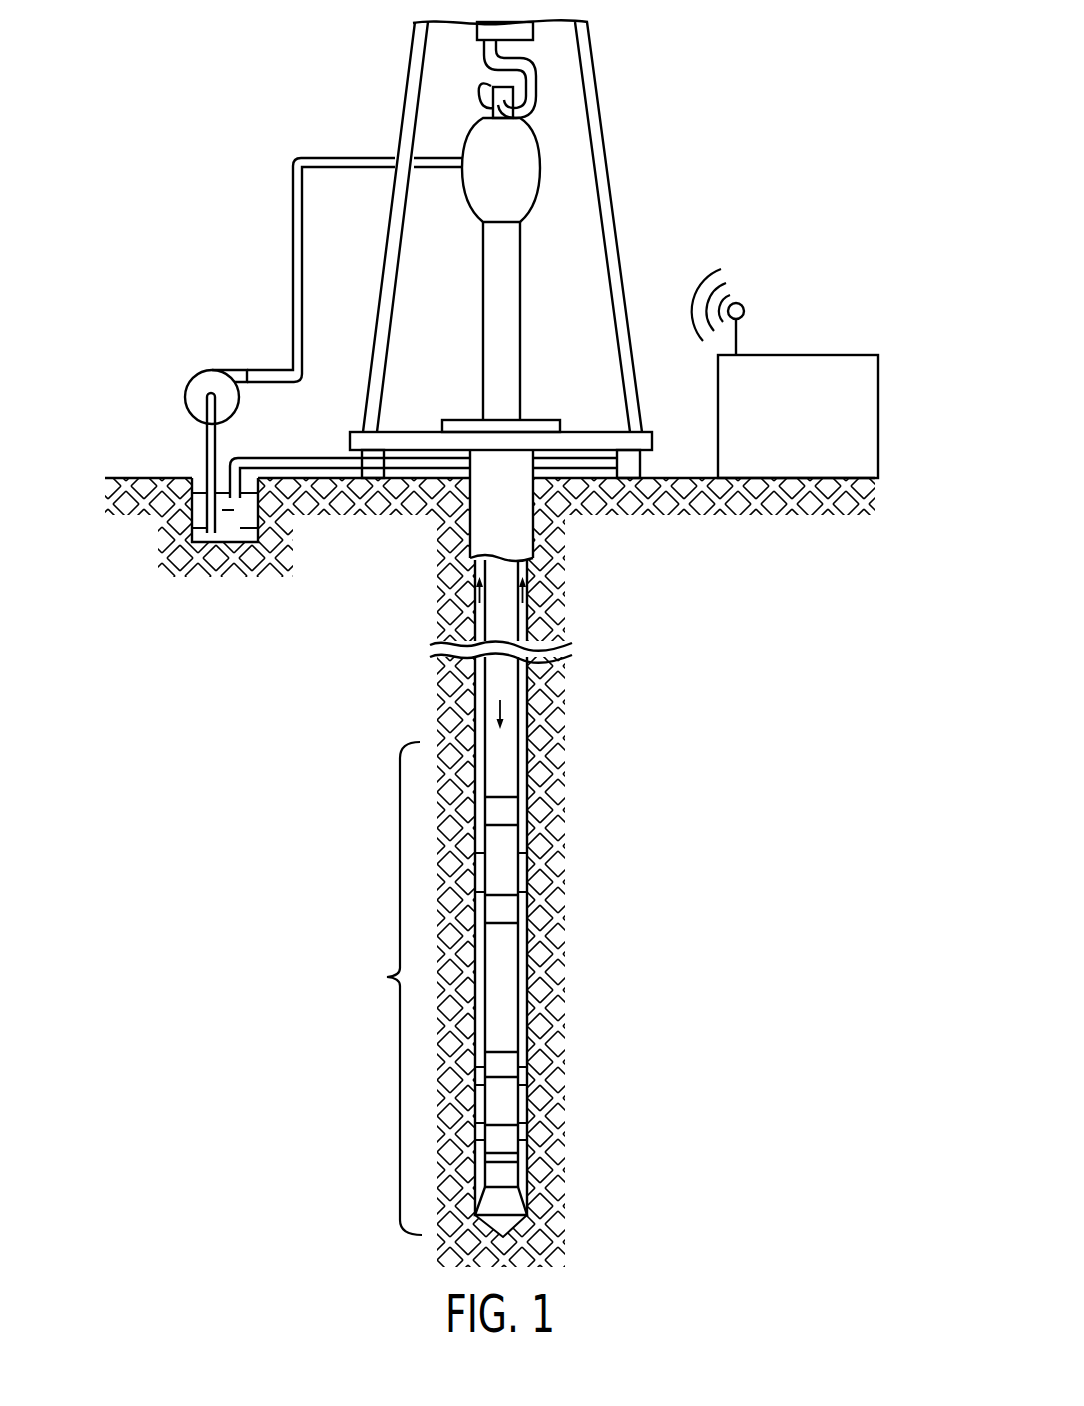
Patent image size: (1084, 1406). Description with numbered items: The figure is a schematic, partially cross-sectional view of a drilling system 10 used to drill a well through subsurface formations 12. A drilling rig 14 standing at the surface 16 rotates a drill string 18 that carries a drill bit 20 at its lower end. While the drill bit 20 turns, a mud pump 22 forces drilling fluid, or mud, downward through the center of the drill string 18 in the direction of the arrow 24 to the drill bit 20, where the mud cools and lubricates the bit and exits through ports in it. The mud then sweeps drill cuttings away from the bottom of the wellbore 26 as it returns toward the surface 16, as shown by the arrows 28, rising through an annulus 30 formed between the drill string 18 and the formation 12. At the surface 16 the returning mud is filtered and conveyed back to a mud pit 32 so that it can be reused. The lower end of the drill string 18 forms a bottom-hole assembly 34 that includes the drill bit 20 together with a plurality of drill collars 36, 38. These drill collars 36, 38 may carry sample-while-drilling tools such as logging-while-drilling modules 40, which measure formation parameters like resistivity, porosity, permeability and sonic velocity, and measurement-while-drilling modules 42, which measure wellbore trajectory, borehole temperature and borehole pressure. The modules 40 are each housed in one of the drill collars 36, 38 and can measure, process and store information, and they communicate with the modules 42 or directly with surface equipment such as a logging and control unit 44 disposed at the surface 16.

The drilling system 10 is at (758, 182).
The subsurface formations 12 is at (772, 957).
The drilling rig 14 is at (377, 133).
The surface 16 is at (670, 478).
The drill string 18 is at (533, 775).
The drill bit 20 is at (512, 1203).
The mud pump 22 is at (188, 393).
The arrow 24 is at (503, 708).
The wellbore 26 is at (530, 722).
The arrows 28 is at (526, 589).
The annulus 30 is at (519, 808).
The mud pit 32 is at (238, 535).
The bottom-hole assembly 34 is at (386, 977).
The drill collar 36 is at (518, 873).
The drill collar 38 is at (520, 1097).
The logging-while-drilling modules 40 is at (510, 883).
The measurement-while-drilling modules 42 is at (507, 815).
The logging and control unit 44 is at (799, 354).